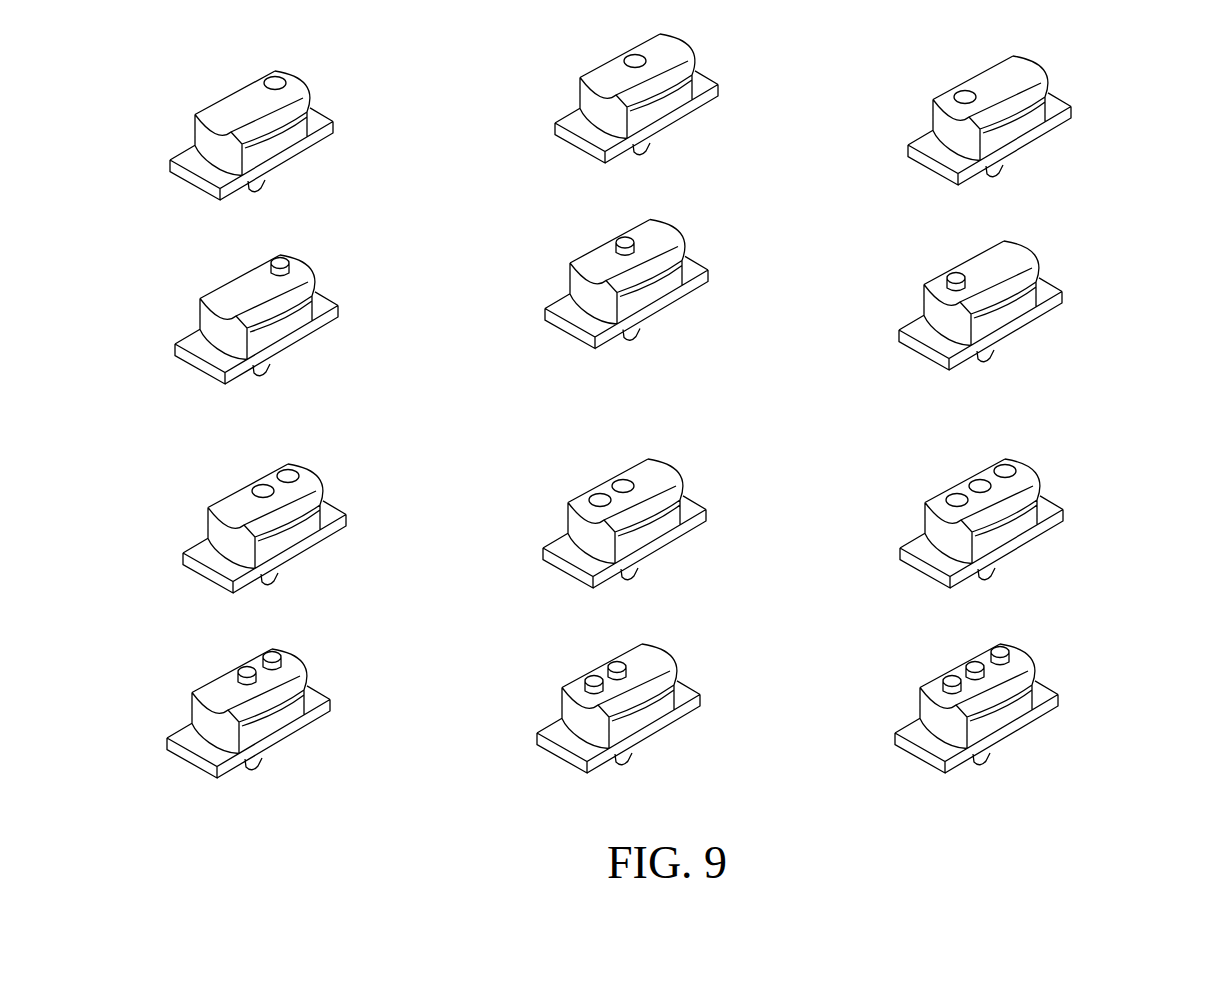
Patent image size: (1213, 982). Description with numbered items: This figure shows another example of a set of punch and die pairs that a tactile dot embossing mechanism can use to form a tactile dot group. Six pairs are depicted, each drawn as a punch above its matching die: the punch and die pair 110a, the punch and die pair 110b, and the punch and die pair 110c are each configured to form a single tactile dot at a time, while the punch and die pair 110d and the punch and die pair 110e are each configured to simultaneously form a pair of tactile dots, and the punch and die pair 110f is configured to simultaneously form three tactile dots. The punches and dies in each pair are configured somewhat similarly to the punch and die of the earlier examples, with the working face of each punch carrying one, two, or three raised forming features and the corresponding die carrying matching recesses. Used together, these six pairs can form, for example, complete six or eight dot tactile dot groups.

The punch and die pair 110a is at (355, 55).
The punch and die pair 110b is at (728, 55).
The punch and die pair 110c is at (1085, 55).
The punch and die pair 110d is at (378, 457).
The punch and die pair 110e is at (728, 457).
The punch and die pair 110f is at (1097, 457).